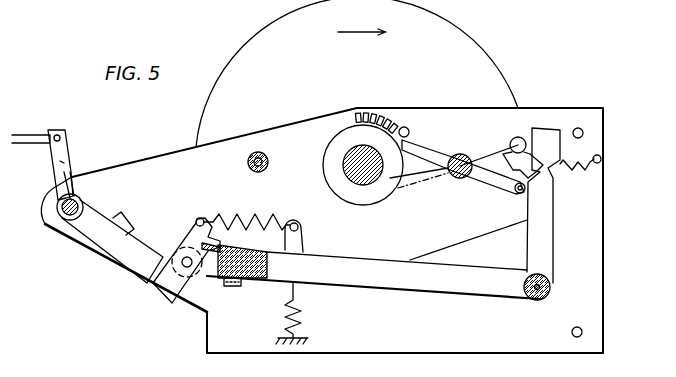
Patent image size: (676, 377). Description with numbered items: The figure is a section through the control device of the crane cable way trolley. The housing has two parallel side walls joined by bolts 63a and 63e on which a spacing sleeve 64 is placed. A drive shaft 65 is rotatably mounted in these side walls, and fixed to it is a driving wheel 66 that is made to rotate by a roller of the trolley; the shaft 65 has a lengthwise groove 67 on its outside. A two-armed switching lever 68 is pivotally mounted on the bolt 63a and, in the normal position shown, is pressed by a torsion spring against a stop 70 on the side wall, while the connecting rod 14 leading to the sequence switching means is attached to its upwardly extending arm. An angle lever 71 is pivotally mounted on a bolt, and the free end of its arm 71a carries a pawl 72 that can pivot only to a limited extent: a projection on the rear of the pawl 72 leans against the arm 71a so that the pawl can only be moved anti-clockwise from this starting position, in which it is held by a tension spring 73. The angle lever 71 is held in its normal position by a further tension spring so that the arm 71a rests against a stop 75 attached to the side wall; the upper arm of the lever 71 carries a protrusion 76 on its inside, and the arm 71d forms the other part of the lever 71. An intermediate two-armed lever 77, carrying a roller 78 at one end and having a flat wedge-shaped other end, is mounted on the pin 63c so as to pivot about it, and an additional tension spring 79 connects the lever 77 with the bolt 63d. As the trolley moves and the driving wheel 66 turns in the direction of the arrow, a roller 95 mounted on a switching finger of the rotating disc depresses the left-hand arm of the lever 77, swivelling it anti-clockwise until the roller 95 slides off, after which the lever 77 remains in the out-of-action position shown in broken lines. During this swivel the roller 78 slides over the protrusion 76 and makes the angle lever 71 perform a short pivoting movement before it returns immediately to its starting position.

The connecting rod 14 is at (34, 134).
The bolt 63a is at (50, 226).
The pin 63c is at (512, 137).
The bolt 63d is at (602, 158).
The bolt 63e is at (534, 302).
The spacing sleeve 64 is at (66, 226).
The drive shaft 65 is at (364, 187).
The driving wheel 66 is at (473, 48).
The lengthwise groove 67 is at (347, 177).
The two-armed switching lever 68 is at (66, 150).
The stop 70 is at (141, 215).
The angle lever 71 is at (404, 221).
The arm 71a is at (412, 288).
The frame arm 71d is at (550, 232).
The pawl 72 is at (171, 290).
The tension spring 73 is at (232, 218).
The stop 75 is at (231, 297).
The protrusion 76 is at (533, 160).
The intermediate two-armed lever 77 is at (433, 153).
The roller 78 is at (513, 194).
The tension spring 79 is at (566, 172).
The roller 95 is at (414, 129).